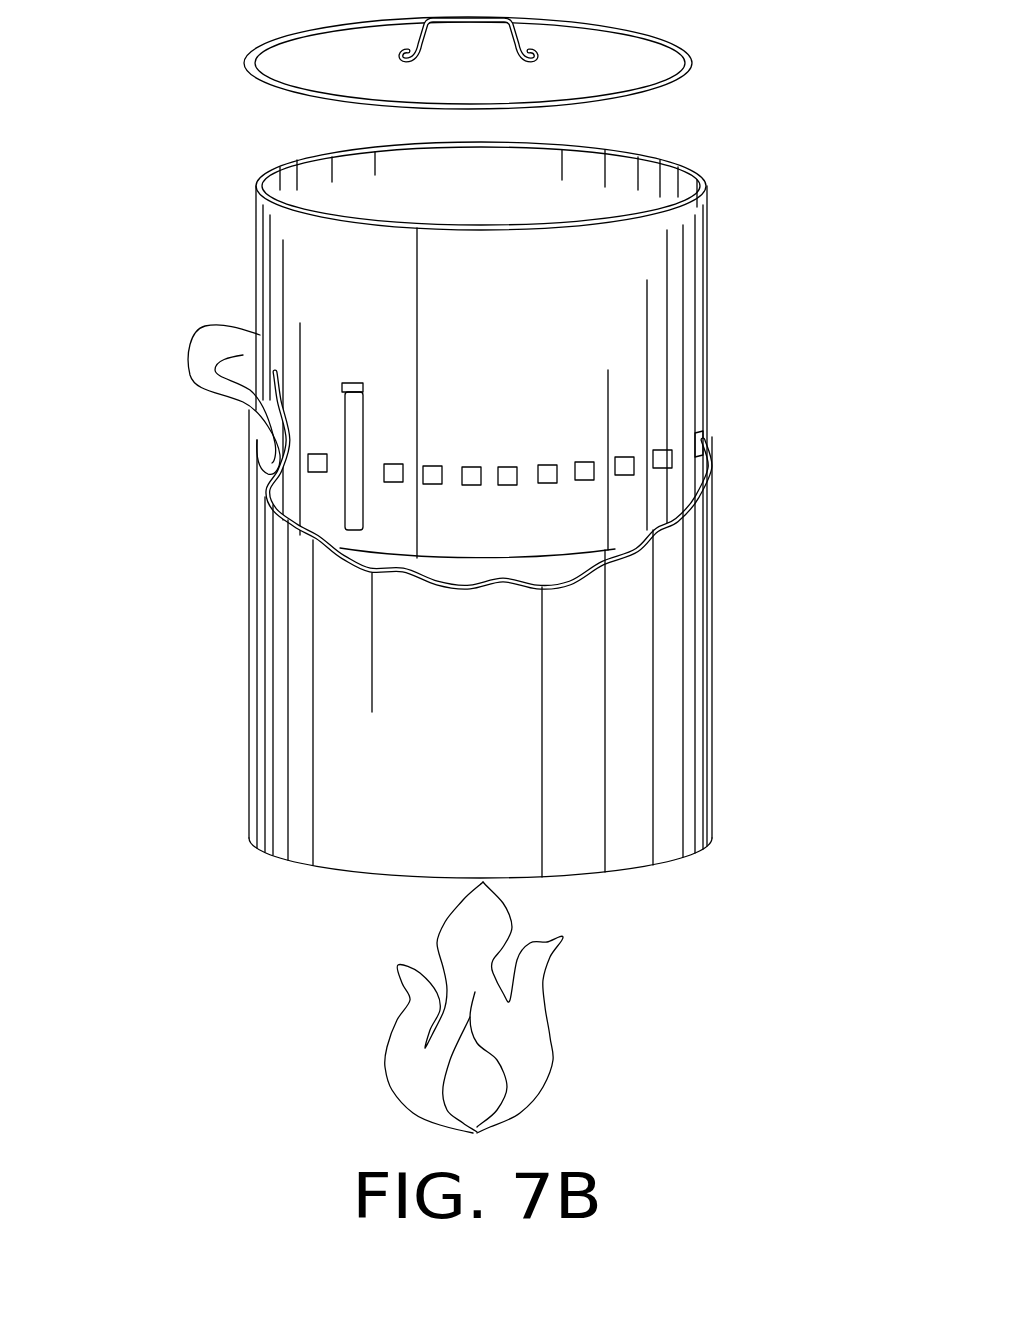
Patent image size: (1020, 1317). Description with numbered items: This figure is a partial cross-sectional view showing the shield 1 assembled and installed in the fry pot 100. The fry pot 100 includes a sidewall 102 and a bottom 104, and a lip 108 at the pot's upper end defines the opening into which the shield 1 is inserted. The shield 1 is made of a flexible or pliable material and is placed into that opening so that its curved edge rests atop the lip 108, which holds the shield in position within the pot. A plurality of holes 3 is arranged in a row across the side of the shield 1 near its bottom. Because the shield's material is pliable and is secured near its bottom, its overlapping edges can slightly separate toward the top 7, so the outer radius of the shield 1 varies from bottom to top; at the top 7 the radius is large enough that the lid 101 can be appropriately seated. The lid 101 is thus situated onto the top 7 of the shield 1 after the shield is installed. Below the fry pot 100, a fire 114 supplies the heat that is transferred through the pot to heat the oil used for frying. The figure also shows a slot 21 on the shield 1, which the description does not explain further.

The shield 1 is at (459, 325).
The plurality of holes 3 is at (463, 477).
The top 7 is at (297, 160).
The slot 21 is at (352, 423).
The fry pot 100 is at (486, 468).
The lid 101 is at (307, 50).
The sidewall 102 is at (548, 556).
The bottom 104 is at (680, 853).
The lip 108 is at (195, 335).
The fire 114 is at (517, 1023).